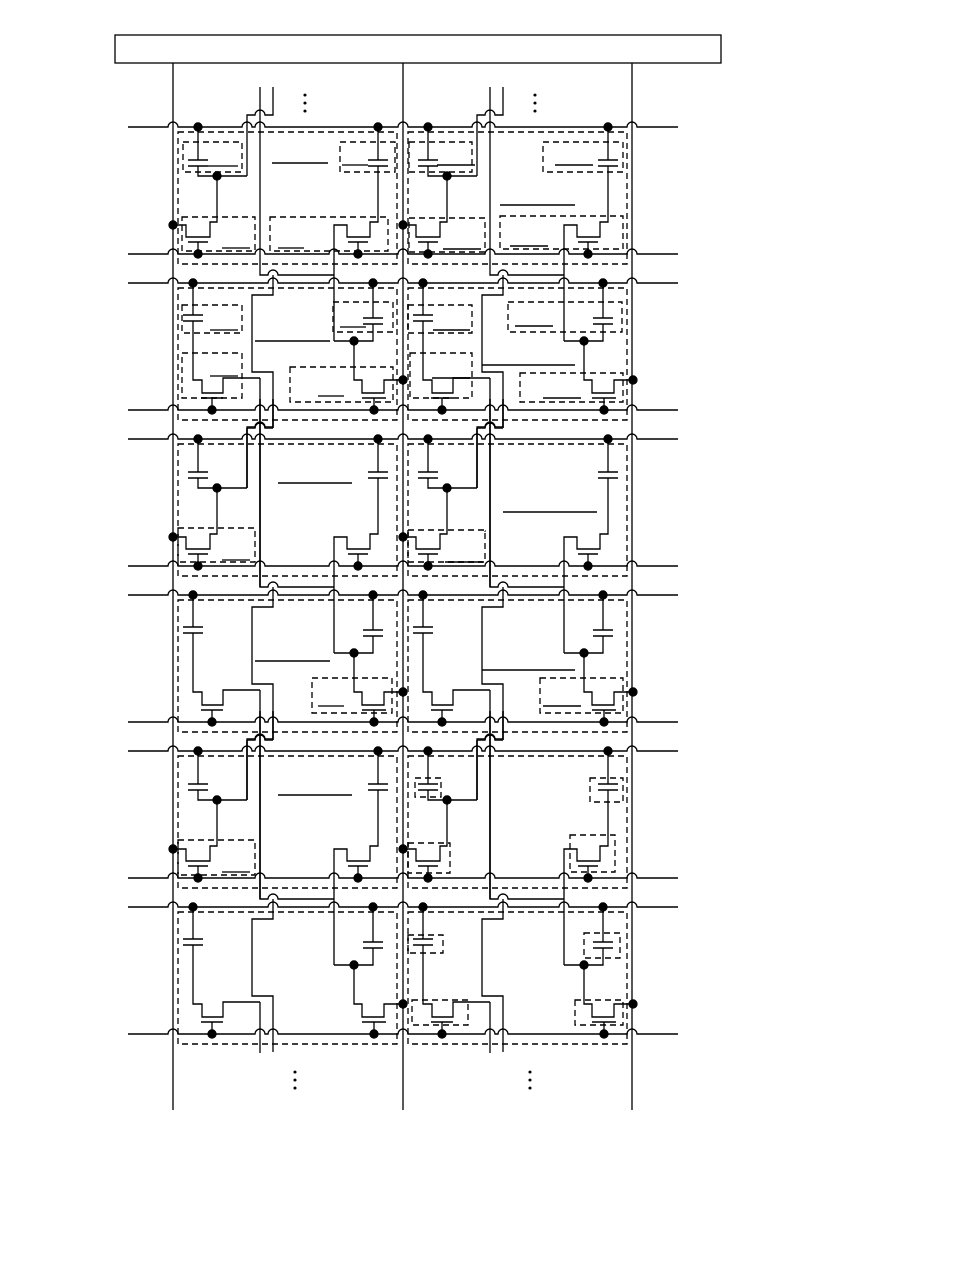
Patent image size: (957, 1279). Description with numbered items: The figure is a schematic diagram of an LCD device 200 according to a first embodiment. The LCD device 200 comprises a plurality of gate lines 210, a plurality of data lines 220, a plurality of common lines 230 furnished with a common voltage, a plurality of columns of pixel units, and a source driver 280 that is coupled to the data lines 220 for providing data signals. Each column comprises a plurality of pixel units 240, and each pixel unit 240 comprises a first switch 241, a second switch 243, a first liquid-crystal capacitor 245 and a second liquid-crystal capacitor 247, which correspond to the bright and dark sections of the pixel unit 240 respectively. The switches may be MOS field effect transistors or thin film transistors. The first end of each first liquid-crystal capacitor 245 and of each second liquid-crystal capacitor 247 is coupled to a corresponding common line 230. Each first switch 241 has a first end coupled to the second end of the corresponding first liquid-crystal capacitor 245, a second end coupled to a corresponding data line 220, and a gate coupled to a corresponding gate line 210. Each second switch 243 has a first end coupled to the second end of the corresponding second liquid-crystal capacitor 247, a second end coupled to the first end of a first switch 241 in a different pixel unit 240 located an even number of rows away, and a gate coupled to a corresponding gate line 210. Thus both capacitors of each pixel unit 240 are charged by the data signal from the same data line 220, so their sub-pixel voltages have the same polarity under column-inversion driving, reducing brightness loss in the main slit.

The LCD device 200 is at (742, 47).
The source driver 280 is at (115, 44).
The data line 220 is at (173, 1075).
The common line 230 is at (662, 132).
The gate line 210 is at (654, 254).
The pixel unit 240 is at (178, 155).
The first switch 241 is at (450, 858).
The second switch 243 is at (570, 838).
The first liquid-crystal capacitor 245 is at (441, 783).
The second liquid-crystal capacitor 247 is at (590, 795).